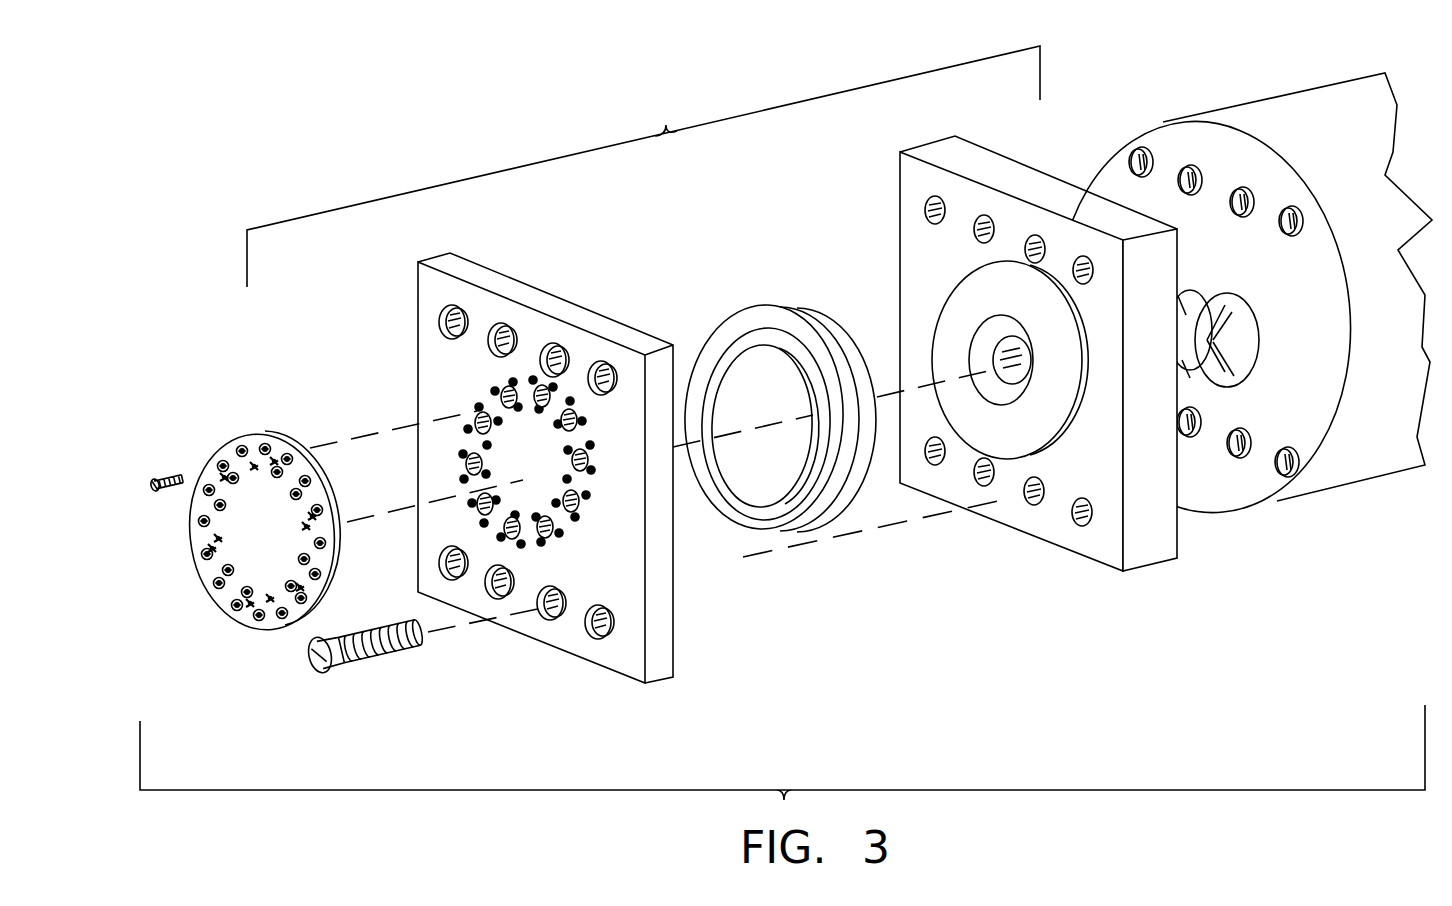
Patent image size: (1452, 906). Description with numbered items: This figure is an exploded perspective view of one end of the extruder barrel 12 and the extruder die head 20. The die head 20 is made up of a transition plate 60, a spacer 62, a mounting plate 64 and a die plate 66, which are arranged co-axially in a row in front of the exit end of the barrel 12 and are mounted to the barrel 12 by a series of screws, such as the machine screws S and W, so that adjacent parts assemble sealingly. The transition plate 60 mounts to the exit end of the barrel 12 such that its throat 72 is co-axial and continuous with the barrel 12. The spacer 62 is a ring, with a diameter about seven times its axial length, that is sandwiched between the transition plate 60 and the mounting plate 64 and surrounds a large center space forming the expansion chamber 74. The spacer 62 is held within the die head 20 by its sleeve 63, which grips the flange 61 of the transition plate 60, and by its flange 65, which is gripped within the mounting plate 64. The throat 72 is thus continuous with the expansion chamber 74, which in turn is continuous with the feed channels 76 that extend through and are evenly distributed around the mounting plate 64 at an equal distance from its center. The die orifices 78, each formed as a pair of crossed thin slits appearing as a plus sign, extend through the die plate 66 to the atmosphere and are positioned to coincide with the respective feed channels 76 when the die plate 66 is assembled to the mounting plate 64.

The barrel 12 is at (1278, 125).
The die head 20 is at (643, 166).
The transition plate 60 is at (960, 399).
The flange 61 is at (944, 294).
The spacer 62 is at (764, 423).
The sleeve 63 is at (712, 397).
The mounting plate 64 is at (491, 491).
The flange 65 is at (717, 343).
The die plate 66 is at (256, 512).
The throat 72 is at (988, 337).
The expansion chamber 74 is at (745, 471).
The feed channels 76 is at (558, 545).
The die orifices 78 is at (257, 458).
The machine screw S is at (161, 494).
The machine screw W is at (375, 660).